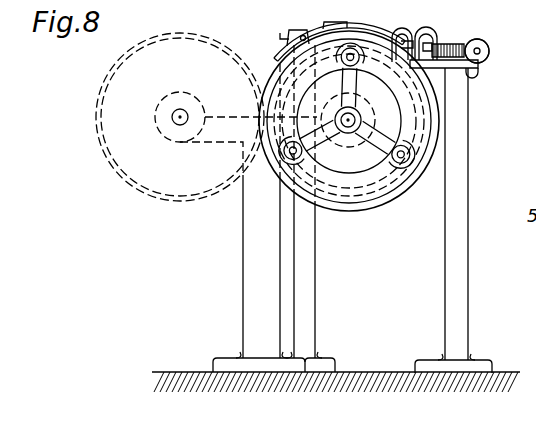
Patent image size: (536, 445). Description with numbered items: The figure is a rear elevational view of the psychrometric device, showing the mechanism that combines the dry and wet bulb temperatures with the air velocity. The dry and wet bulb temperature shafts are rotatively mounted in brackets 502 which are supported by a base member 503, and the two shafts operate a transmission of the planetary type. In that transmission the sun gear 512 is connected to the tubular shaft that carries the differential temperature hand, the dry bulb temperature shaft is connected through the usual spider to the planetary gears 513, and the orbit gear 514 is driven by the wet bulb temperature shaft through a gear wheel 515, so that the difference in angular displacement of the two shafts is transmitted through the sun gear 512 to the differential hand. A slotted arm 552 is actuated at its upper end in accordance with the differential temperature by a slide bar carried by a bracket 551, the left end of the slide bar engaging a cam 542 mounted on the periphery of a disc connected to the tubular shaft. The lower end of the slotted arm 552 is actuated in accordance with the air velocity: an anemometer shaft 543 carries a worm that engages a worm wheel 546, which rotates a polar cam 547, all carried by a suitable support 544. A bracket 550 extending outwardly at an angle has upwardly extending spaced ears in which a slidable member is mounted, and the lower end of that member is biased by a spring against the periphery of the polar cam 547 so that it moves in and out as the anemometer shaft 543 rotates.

The brackets 502 is at (249, 116).
The base member 503 is at (304, 373).
The sun gear 512 is at (390, 107).
The planetary gears 513 is at (359, 59).
The orbit gear 514 is at (367, 205).
The gear wheel 515 is at (207, 202).
The cam 542 is at (338, 21).
The anemometer shaft 543 is at (491, 53).
The support 544 is at (470, 72).
The worm wheel 546 is at (463, 45).
The polar cam 547 is at (447, 36).
The bracket 550 is at (423, 29).
The bracket 551 is at (296, 29).
The slotted arm 552 is at (383, 32).